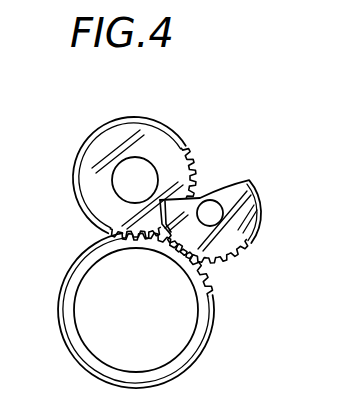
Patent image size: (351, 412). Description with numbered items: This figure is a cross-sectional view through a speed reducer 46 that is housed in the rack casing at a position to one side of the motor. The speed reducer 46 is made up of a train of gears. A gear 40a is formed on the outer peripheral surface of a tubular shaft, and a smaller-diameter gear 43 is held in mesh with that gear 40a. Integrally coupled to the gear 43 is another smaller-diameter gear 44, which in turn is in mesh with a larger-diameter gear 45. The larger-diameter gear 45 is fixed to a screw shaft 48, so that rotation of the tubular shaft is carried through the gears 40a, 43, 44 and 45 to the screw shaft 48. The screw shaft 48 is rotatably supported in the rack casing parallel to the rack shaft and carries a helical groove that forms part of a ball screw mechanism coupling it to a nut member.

The gear 40a is at (198, 357).
The smaller-diameter gear 43 is at (253, 220).
The smaller-diameter gear 44 is at (202, 192).
The larger-diameter gear 45 is at (109, 159).
The speed reducer 46 is at (247, 195).
The screw shaft 48 is at (125, 185).